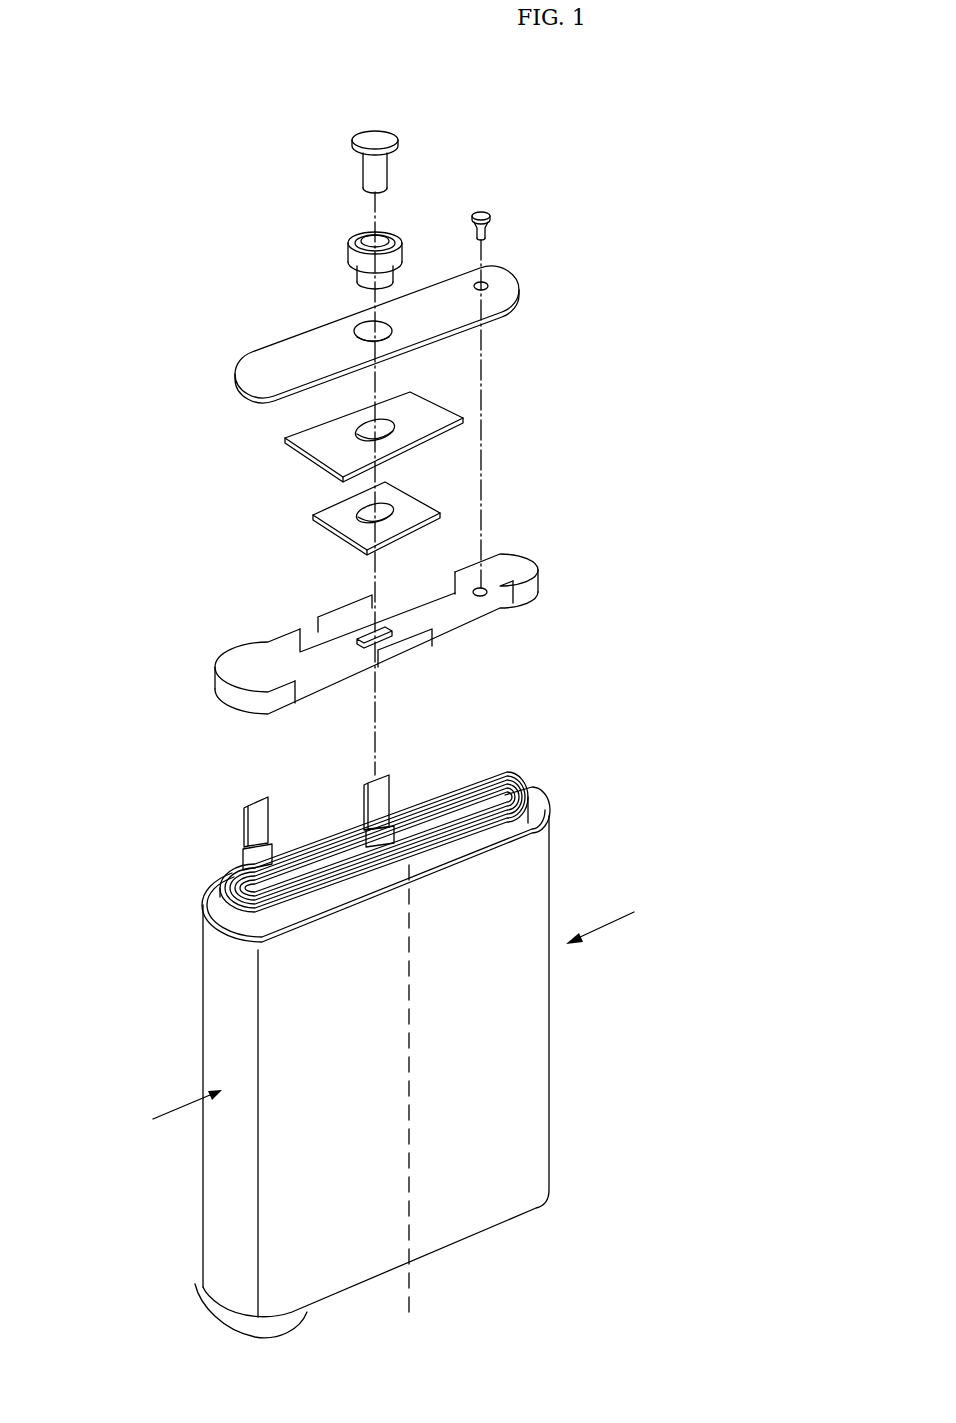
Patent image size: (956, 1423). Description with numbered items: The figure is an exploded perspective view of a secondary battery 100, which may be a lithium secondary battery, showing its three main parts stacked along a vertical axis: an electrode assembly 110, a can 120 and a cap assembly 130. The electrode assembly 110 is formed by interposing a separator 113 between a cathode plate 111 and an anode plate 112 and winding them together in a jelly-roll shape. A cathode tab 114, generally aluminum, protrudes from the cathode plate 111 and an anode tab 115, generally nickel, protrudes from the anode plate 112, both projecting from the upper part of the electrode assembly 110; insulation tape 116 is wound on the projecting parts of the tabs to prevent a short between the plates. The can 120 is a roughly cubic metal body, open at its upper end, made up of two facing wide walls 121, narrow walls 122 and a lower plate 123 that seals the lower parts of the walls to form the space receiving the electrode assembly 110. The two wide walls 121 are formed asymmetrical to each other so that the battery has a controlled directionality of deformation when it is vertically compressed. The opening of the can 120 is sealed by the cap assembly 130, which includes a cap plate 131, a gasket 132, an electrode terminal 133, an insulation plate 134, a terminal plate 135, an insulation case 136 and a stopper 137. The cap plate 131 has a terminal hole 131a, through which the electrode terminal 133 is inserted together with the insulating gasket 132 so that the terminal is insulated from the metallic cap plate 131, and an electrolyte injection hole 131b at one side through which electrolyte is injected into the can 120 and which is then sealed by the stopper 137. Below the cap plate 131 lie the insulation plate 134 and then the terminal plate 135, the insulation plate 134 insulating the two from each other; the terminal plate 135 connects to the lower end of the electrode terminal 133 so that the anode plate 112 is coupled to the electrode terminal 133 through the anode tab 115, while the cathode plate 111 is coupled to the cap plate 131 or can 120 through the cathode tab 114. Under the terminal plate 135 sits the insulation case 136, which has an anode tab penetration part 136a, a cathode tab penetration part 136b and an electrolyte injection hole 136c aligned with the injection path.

The secondary battery 100 is at (156, 107).
The electrode assembly 110 is at (597, 732).
The cathode plate 111 is at (506, 775).
The anode plate 112 is at (527, 780).
The separator 113 is at (514, 780).
The cathode tab 114 is at (257, 823).
The anode tab 115 is at (368, 799).
The insulation tape 116 is at (400, 823).
The can 120 is at (130, 1181).
The wide walls 121 is at (274, 1197).
The narrow walls 122 is at (209, 1180).
The lower plate 123 is at (206, 1302).
The cap assembly 130 is at (571, 153).
The cap plate 131 is at (467, 310).
The terminal hole 131a is at (394, 333).
The electrolyte injection hole 131b is at (485, 285).
The gasket 132 is at (360, 244).
The electrode terminal 133 is at (370, 134).
The insulation plate 134 is at (300, 446).
The terminal plate 135 is at (316, 519).
The insulation case 136 is at (219, 640).
The anode tab penetration part 136a is at (372, 634).
The cathode tab penetration part 136b is at (300, 652).
The electrolyte injection hole 136c is at (483, 589).
The stopper 137 is at (484, 213).